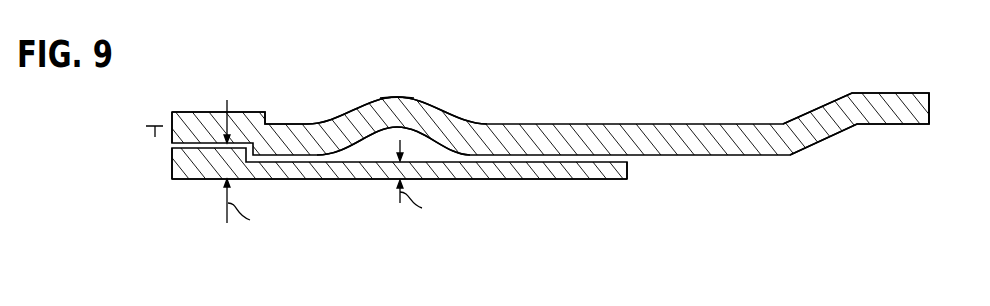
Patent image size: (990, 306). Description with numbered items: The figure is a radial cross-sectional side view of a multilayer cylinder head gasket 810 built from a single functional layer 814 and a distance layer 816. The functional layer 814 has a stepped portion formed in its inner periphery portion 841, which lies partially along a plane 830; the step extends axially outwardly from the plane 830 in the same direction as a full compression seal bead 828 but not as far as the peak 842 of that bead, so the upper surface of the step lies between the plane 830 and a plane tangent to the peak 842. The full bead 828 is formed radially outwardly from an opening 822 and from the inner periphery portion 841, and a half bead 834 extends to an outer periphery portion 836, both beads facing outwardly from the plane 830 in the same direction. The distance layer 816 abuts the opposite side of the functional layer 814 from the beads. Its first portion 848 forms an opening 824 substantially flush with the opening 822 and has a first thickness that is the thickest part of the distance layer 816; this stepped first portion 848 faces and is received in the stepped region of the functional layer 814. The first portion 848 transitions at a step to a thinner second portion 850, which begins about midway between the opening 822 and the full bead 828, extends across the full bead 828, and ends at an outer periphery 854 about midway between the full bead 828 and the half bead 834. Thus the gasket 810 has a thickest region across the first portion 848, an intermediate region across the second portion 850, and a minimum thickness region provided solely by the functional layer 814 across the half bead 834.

The multilayer gasket 810 is at (760, 67).
The functional layer 814 is at (193, 112).
The distance layer 816 is at (213, 180).
The opening 822 is at (172, 117).
The opening 824 is at (172, 162).
The full compression seal bead 828 is at (403, 98).
The plane 830 is at (152, 136).
The half bead 834 is at (890, 93).
The outer periphery portion 836 is at (929, 108).
The inner periphery portion 841 is at (250, 112).
The peak 842 is at (397, 97).
The first portion 848 is at (195, 180).
The second portion 850 is at (312, 180).
The outer periphery 854 is at (628, 175).